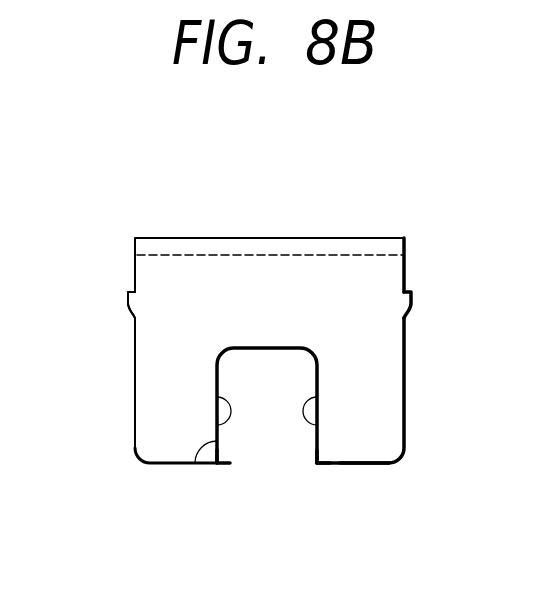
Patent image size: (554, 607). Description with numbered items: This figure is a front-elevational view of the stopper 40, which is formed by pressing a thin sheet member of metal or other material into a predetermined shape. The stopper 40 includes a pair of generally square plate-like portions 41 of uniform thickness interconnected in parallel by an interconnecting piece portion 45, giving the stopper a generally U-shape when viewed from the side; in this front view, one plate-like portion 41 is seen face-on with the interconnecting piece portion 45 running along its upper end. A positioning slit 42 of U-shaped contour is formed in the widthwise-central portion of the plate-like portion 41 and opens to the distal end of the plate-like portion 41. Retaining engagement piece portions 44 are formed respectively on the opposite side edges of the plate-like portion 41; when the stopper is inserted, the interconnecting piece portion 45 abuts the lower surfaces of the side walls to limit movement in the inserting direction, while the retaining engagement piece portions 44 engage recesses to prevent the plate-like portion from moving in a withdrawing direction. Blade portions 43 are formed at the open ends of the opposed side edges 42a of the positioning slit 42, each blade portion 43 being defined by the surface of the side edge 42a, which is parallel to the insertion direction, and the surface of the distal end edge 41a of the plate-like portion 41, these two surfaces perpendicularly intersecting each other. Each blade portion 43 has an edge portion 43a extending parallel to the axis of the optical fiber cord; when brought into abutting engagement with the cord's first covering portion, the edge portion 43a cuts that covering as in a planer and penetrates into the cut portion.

The stopper 40 is at (260, 195).
The plate-like portion 41 is at (383, 427).
The distal end edge 41a is at (177, 465).
The positioning slit 42 is at (267, 349).
The side edge of positioning slit 42a is at (217, 398).
The blade portion 43 is at (207, 462).
The edge portion 43a is at (218, 465).
The retaining engagement piece portion 44 is at (127, 297).
The interconnecting piece portion 45 is at (336, 238).